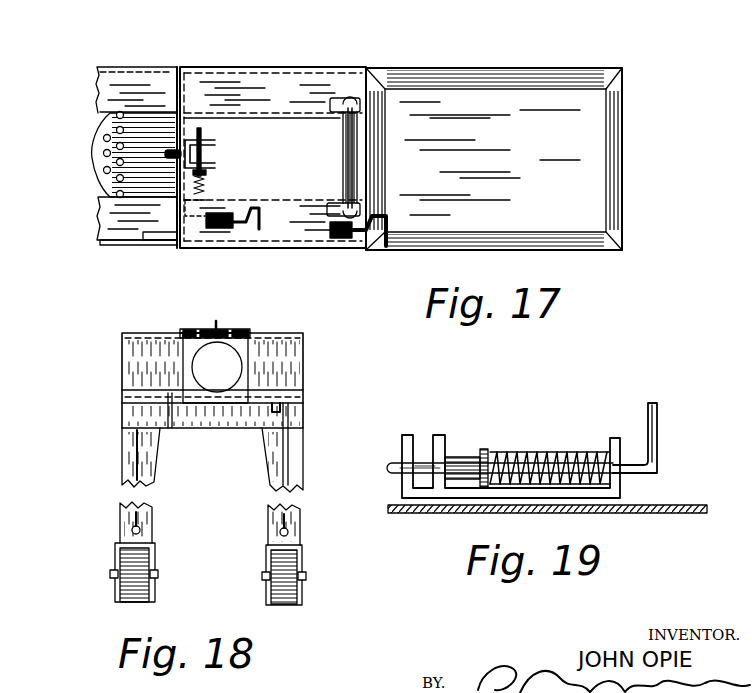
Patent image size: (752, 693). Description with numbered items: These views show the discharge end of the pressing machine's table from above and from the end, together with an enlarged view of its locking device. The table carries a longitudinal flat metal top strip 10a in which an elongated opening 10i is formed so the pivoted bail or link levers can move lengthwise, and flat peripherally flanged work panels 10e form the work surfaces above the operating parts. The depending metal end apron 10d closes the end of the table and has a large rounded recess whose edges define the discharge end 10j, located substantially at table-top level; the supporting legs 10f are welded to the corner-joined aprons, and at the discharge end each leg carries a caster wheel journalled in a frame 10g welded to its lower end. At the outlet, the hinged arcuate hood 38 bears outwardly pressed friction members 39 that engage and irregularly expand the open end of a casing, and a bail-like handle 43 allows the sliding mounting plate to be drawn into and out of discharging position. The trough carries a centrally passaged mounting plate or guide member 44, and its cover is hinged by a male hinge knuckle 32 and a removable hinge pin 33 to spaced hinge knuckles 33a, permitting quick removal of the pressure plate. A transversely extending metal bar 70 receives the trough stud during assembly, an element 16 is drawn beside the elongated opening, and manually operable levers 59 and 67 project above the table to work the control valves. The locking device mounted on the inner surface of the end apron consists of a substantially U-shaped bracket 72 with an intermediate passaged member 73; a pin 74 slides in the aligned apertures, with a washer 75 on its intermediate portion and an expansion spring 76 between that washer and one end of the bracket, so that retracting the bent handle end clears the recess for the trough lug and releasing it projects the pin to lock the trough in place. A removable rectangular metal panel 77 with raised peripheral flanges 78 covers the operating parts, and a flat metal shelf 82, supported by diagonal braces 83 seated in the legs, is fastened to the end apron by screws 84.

In FIG. 17, the longitudinal flat metal top strip 10a is at (216, 114).
In FIG. 18, the depending metal end apron 10d is at (136, 363).
In FIG. 19, the depending metal end apron 10d is at (648, 510).
In FIG. 17, the work panel 10e is at (232, 96).
In FIG. 18, the supporting leg 10f is at (135, 456).
In FIG. 18, the caster frame 10g is at (297, 549).
In FIG. 17, the elongated opening 10i is at (346, 104).
In FIG. 18, the discharge end 10j is at (220, 372).
In FIG. 17, the rod 16 is at (345, 131).
In FIG. 18, the male hinge knuckle 32 is at (202, 330).
In FIG. 18, the hinge pin 33 is at (249, 334).
In FIG. 18, the hinge knuckle 33a is at (246, 330).
In FIG. 17, the hood 38 is at (132, 142).
In FIG. 17, the friction member 39 is at (95, 121).
In FIG. 17, the bail-like handle 43 is at (159, 238).
In FIG. 18, the mounting plate or guide member 44 is at (183, 331).
In FIG. 17, the manually operable lever 59 is at (257, 230).
In FIG. 17, the manually operable lever 67 is at (382, 242).
In FIG. 17, the transversely extending metal bar 70 is at (377, 108).
In FIG. 17, the U-shaped bracket 72 is at (214, 143).
In FIG. 19, the U-shaped bracket 72 is at (409, 433).
In FIG. 17, the intermediate passaged member 73 is at (214, 171).
In FIG. 19, the intermediate passaged member 73 is at (446, 459).
In FIG. 19, the pin 74 is at (636, 463).
In FIG. 17, the washer 75 is at (280, 180).
In FIG. 19, the washer 75 is at (486, 456).
In FIG. 17, the expansion spring 76 is at (206, 182).
In FIG. 19, the expansion spring 76 is at (532, 458).
In FIG. 17, the rectangular metal panel 77 is at (590, 187).
In FIG. 17, the peripheral flange 78 is at (498, 80).
In FIG. 17, the flat metal shelf 82 is at (136, 222).
In FIG. 18, the flat metal shelf 82 is at (170, 394).
In FIG. 18, the diagonal brace 83 is at (289, 478).
In FIG. 18, the screw 84 is at (272, 406).